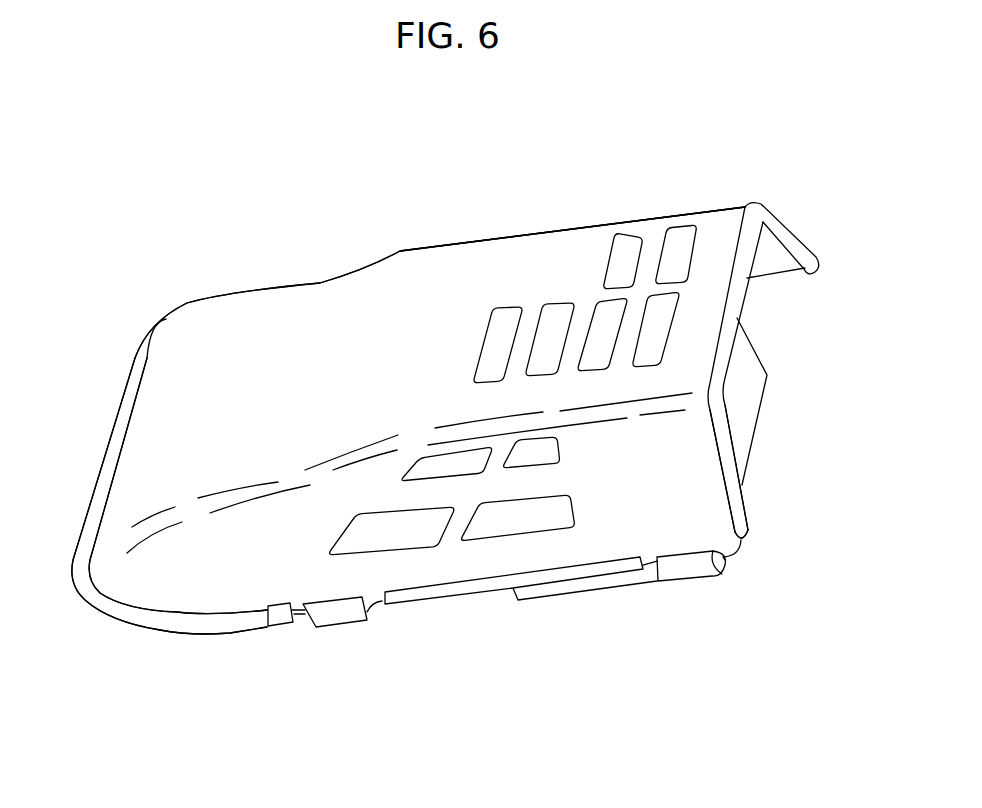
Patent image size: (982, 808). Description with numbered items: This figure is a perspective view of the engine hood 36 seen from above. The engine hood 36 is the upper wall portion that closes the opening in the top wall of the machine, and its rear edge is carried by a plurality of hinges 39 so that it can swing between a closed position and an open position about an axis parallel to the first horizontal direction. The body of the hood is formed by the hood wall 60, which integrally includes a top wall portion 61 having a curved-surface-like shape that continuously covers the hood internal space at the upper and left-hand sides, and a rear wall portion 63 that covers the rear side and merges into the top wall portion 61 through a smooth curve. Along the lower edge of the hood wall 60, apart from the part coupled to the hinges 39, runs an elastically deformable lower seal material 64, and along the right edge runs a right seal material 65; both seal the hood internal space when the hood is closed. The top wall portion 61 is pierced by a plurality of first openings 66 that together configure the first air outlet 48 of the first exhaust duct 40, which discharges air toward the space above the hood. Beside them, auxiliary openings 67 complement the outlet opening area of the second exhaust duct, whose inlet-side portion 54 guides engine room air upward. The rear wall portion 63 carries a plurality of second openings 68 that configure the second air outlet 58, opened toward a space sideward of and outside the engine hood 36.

The engine hood 36 is at (422, 198).
The hinges 39 is at (337, 623).
The first exhaust duct 40 is at (770, 399).
The first air outlet 48 is at (713, 237).
The inlet-side portion 54 is at (767, 306).
The second air outlet 58 is at (550, 542).
The hood wall 60 is at (358, 262).
The top wall portion 61 is at (465, 280).
The rear wall portion 63 is at (287, 589).
The lower seal material 64 is at (173, 620).
The right seal material 65 is at (740, 509).
The first openings 66 is at (597, 318).
The auxiliary openings 67 is at (500, 335).
The second openings 68 is at (528, 452).